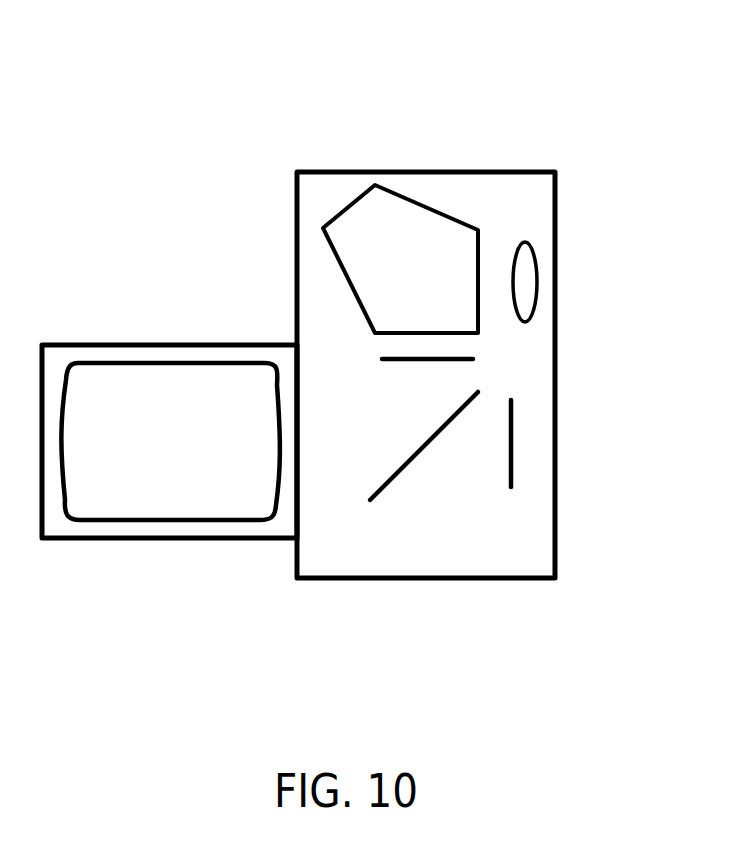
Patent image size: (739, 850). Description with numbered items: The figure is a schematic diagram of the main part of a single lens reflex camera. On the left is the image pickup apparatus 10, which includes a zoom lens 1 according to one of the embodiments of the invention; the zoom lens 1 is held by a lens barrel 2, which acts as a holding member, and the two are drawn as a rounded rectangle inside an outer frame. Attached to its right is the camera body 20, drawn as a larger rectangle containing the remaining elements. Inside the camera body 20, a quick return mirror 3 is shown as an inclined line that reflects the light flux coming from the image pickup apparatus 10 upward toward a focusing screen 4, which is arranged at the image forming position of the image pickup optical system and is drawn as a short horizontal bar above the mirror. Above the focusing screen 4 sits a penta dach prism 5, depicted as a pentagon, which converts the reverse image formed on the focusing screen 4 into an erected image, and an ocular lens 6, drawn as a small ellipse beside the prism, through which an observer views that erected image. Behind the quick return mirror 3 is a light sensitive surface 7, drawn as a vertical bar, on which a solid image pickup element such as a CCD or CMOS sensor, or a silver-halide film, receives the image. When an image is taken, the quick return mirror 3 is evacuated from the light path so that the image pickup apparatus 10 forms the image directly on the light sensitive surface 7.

The image pickup apparatus 10 is at (207, 332).
The camera body 20 is at (398, 142).
The zoom lens 1 is at (153, 362).
The lens barrel 2 is at (173, 540).
The quick return mirror 3 is at (397, 477).
The focusing screen 4 is at (397, 365).
The penta dach prism 5 is at (356, 200).
The ocular lens 6 is at (535, 255).
The light sensitive surface 7 is at (515, 440).